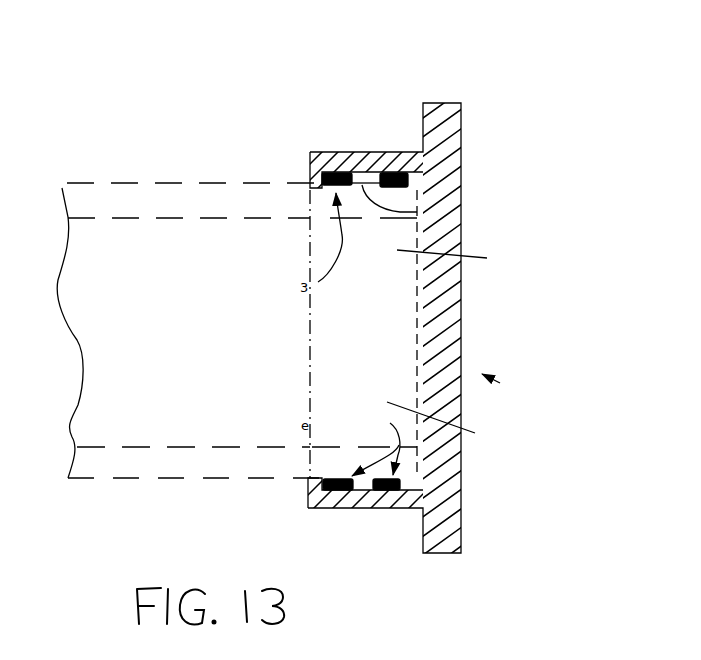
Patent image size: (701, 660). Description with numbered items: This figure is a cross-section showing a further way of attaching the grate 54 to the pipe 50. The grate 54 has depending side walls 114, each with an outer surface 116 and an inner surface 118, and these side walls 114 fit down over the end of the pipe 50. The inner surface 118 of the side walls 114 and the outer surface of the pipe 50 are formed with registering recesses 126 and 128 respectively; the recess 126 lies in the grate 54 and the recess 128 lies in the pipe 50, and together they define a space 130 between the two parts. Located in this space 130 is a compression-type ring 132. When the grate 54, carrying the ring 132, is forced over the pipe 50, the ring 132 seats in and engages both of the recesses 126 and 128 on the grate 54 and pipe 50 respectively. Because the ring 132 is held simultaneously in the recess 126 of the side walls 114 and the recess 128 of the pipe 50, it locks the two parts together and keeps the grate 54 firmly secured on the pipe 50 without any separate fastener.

The pipe 50 is at (135, 465).
The grate 54 is at (448, 299).
The depending side walls 114 is at (312, 161).
The outer surface 116 is at (364, 148).
The inner surface 118 is at (400, 220).
The recess 126 is at (417, 177).
The recess 128 is at (408, 186).
The space 130 is at (392, 174).
The compression-type ring 132 is at (322, 181).